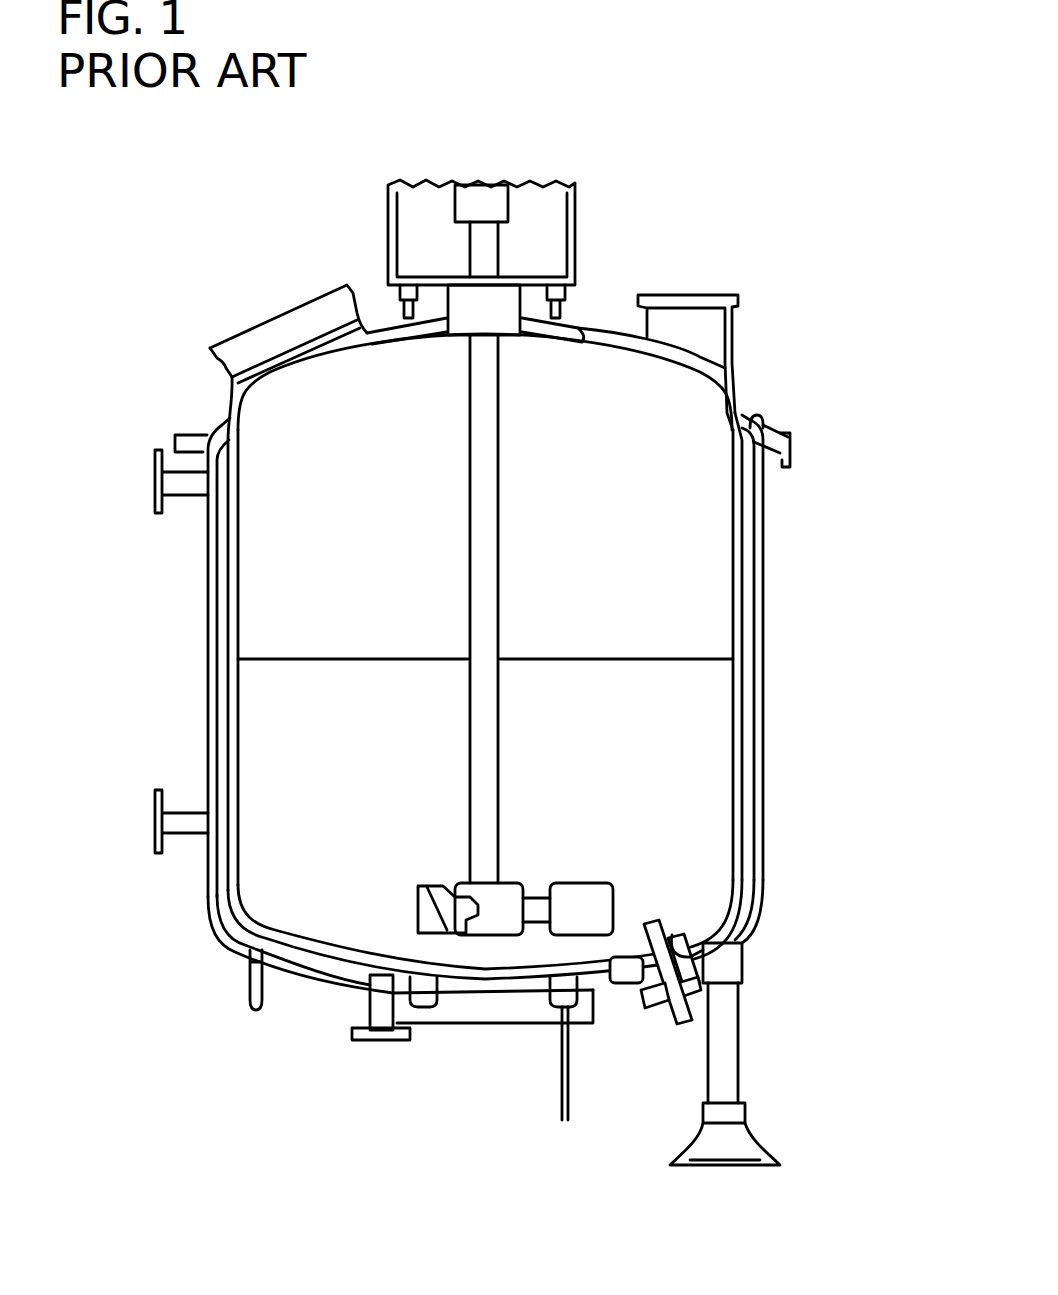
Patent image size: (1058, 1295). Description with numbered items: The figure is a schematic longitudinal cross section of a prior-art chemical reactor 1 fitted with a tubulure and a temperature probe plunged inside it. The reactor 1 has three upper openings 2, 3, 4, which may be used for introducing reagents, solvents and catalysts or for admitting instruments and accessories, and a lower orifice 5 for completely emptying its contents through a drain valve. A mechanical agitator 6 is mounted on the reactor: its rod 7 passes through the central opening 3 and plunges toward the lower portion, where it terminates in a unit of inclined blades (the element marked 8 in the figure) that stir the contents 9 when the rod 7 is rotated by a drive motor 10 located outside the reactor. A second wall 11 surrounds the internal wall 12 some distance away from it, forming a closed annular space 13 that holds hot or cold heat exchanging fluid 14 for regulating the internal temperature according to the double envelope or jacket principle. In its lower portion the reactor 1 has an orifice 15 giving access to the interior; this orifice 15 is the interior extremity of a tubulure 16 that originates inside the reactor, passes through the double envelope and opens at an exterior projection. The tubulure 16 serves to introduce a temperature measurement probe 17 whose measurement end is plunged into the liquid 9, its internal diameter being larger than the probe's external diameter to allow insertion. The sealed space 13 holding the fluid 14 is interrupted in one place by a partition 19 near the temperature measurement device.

The chemical reactor 1 is at (845, 626).
The upper opening 2 is at (263, 287).
The central opening 3 is at (515, 341).
The upper opening 4 is at (685, 268).
The lower orifice 5 is at (487, 978).
The mechanical agitator 6 is at (464, 668).
The rod 7 is at (505, 640).
The impeller 8 is at (433, 897).
The contents 9 is at (255, 727).
The drive motor 10 is at (606, 204).
The second wall 11 is at (762, 717).
The internal wall 12 is at (740, 812).
The closed annular space 13 is at (750, 767).
The heat exchanging fluid 14 is at (230, 900).
The orifice 15 is at (666, 916).
The tubulure 16 is at (645, 983).
The temperature measurement probe 17 is at (675, 1003).
The partition 19 is at (595, 1000).